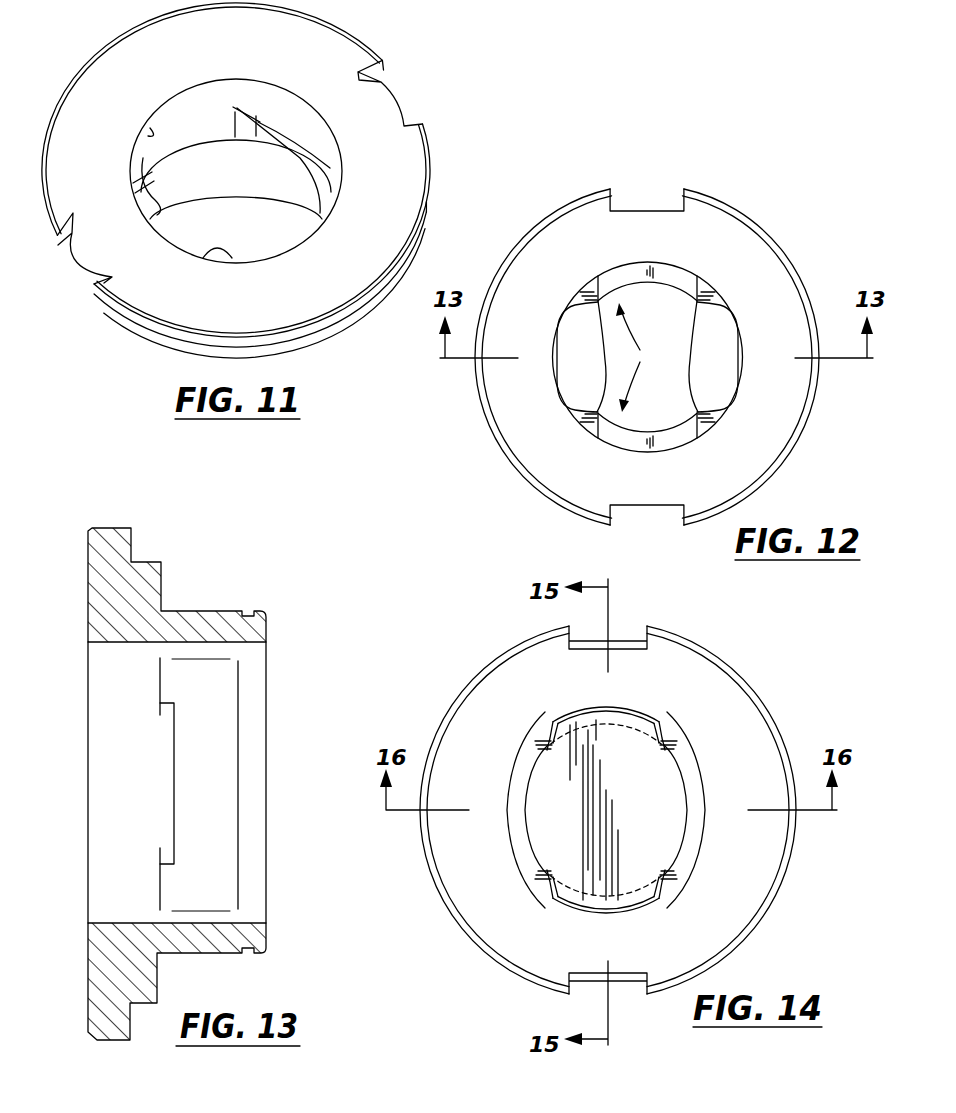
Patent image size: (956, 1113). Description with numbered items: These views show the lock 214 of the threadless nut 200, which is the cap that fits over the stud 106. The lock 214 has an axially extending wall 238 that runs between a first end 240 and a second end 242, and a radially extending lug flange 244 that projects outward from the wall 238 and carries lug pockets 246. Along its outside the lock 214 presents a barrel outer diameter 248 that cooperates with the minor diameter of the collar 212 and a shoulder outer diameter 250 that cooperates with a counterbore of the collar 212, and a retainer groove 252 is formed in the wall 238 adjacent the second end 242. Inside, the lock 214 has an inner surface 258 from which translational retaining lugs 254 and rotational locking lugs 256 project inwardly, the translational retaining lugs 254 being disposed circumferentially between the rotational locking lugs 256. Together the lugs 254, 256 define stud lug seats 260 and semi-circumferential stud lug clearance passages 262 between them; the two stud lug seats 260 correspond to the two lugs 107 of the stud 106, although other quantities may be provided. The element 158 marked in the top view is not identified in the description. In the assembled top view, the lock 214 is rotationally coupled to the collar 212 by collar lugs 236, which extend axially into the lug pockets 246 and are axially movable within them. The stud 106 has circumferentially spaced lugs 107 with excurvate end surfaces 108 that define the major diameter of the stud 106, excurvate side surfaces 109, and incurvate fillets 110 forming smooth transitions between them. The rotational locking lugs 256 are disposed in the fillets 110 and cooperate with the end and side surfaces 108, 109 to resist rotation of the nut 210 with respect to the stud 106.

In FIG. 11, the lock 214 is at (400, 30).
In FIG. 12, the lock 214 is at (762, 180).
In FIG. 13, the lock 214 is at (225, 535).
In FIG. 14, the lock 214 is at (724, 646).
In FIG. 11, the lug flange 244 is at (402, 173).
In FIG. 12, the lug flange 244 is at (763, 263).
In FIG. 13, the lug flange 244 is at (109, 543).
In FIG. 11, the lug pockets 246 is at (401, 120).
In FIG. 12, the lug pockets 246 is at (634, 203).
In FIG. 14, the lug pockets 246 is at (641, 634).
In FIG. 11, the stud lug clearance passages 262 is at (213, 136).
In FIG. 12, the stud lug clearance passages 262 is at (598, 396).
In FIG. 11, the translational retaining lugs 254 is at (163, 198).
In FIG. 12, the translational retaining lugs 254 is at (676, 283).
In FIG. 13, the translational retaining lugs 254 is at (210, 747).
In FIG. 11, the rotational locking lugs 256 is at (165, 172).
In FIG. 12, the rotational locking lugs 256 is at (651, 356).
In FIG. 13, the rotational locking lugs 256 is at (192, 688).
In FIG. 14, the rotational locking lugs 256 is at (544, 748).
In FIG. 11, the inner surface 258 is at (150, 128).
In FIG. 12, the inner surface 258 is at (564, 334).
In FIG. 13, the inner surface 258 is at (112, 725).
In FIG. 12, the stud lug seats 260 is at (644, 357).
In FIG. 13, the stud lug seats 260 is at (150, 794).
In FIG. 12, the bore 158 is at (736, 338).
In FIG. 13, the shoulder outer diameter 250 is at (143, 560).
In FIG. 13, the axially extending wall 238 is at (161, 620).
In FIG. 13, the barrel outer diameter 248 is at (205, 609).
In FIG. 13, the retainer groove 252 is at (248, 611).
In FIG. 13, the second end 242 is at (268, 644).
In FIG. 13, the first end 240 is at (88, 644).
In FIG. 14, the nut 200 is at (472, 608).
In FIG. 14, the nut 210 is at (468, 657).
In FIG. 14, the collar lugs 236 is at (616, 638).
In FIG. 14, the collar 212 is at (618, 1004).
In FIG. 14, the lugs 107 is at (601, 715).
In FIG. 14, the end surfaces 108 is at (634, 719).
In FIG. 14, the side surfaces 109 is at (687, 796).
In FIG. 14, the fillets 110 is at (672, 742).
In FIG. 14, the stud 106 is at (655, 821).